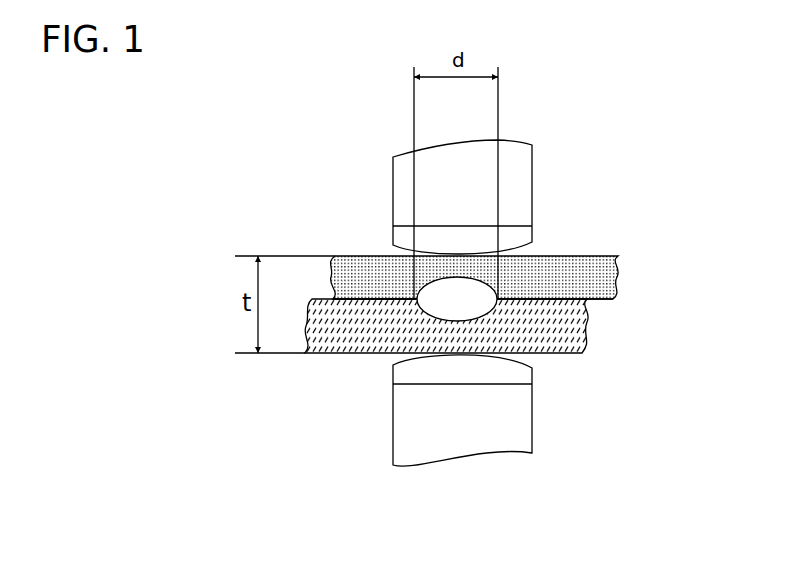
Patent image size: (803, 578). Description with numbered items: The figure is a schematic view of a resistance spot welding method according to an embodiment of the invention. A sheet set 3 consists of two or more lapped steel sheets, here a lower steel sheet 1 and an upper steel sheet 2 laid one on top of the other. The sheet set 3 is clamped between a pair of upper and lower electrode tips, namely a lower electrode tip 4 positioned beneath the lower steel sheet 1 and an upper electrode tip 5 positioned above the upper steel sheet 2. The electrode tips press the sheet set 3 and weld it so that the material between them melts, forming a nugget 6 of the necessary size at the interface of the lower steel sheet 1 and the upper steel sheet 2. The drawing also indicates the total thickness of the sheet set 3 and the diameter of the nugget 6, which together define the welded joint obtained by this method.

The lower steel sheet 1 is at (585, 330).
The upper steel sheet 2 is at (618, 277).
The sheet set 3 is at (702, 255).
The lower electrode tip 4 is at (532, 418).
The upper electrode tip 5 is at (532, 195).
The nugget 6 is at (453, 302).